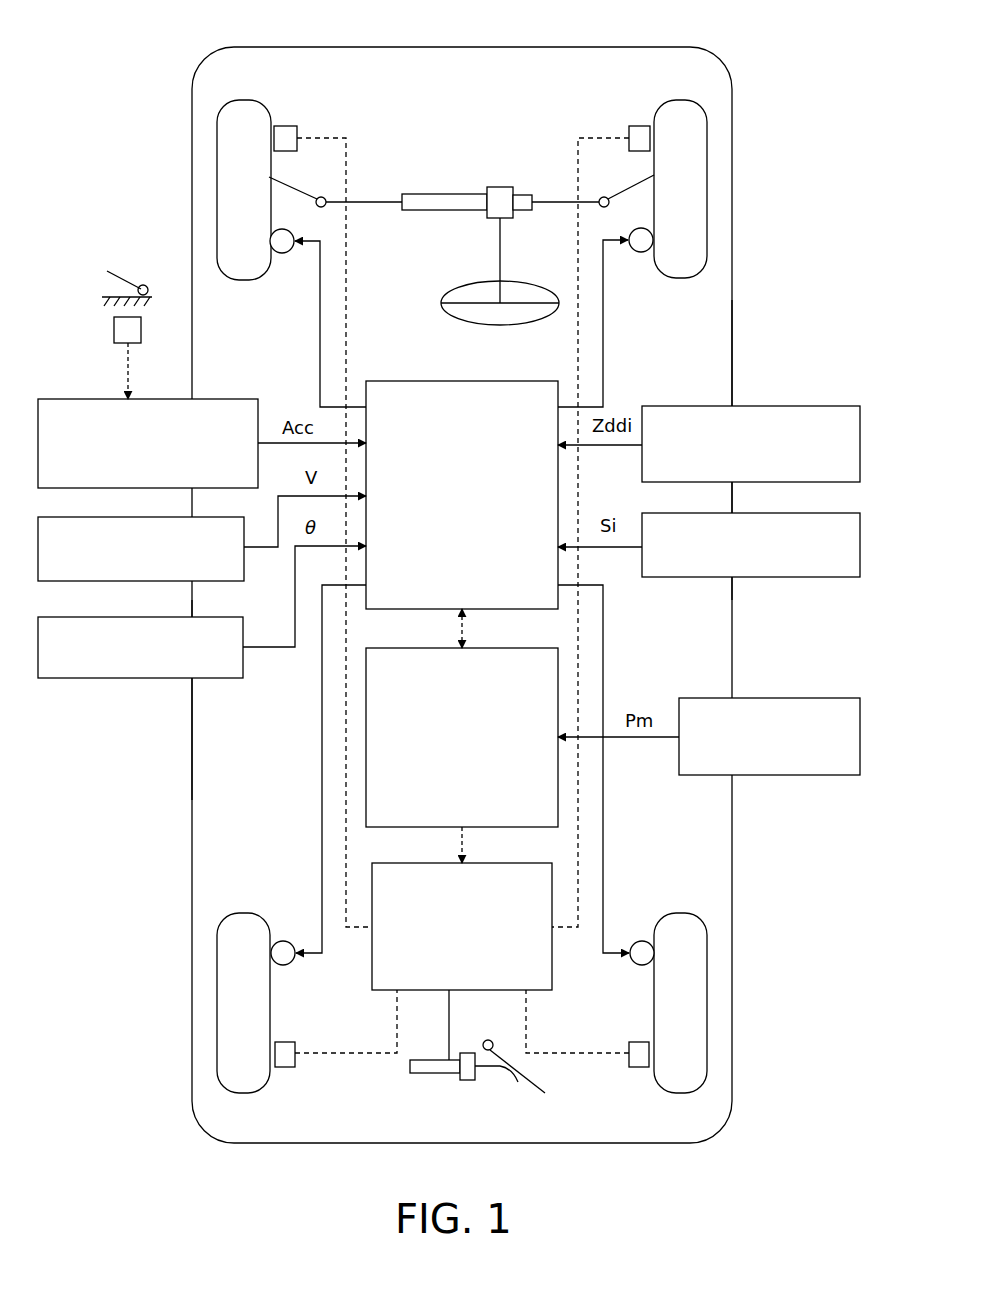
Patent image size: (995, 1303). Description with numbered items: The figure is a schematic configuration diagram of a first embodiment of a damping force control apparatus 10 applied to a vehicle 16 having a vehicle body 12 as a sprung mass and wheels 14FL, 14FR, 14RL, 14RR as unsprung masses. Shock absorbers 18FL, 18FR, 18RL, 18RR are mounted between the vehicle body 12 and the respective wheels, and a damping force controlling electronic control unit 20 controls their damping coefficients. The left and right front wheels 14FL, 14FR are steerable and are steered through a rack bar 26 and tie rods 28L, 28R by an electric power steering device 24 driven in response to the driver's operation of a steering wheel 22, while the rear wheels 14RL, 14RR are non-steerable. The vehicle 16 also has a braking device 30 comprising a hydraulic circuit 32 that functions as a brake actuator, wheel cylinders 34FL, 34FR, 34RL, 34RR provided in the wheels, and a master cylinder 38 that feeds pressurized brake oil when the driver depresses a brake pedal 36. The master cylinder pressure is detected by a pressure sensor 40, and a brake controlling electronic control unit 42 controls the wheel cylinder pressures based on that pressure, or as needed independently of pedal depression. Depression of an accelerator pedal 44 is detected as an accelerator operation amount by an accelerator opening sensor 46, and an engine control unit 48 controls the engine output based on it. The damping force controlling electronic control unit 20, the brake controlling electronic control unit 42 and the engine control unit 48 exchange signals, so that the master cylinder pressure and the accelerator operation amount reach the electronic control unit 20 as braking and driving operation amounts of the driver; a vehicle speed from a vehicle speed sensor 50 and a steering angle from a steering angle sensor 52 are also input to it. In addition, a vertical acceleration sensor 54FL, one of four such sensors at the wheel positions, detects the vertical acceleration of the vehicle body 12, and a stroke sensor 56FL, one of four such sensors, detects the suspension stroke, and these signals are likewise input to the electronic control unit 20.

The damping force control apparatus 10 is at (776, 332).
The vehicle body 12 is at (732, 145).
The front left wheel 14FL is at (217, 166).
The front right wheel 14FR is at (707, 201).
The rear left wheel 14RL is at (217, 1008).
The rear right wheel 14RR is at (707, 1008).
The vehicle 16 is at (190, 97).
The front left shock absorber 18FL is at (282, 253).
The front right shock absorber 18FR is at (640, 252).
The rear left shock absorber 18RL is at (284, 941).
The rear right shock absorber 18RR is at (643, 941).
The damping force controlling electronic control unit 20 is at (450, 582).
The steering wheel 22 is at (505, 325).
The electric power steering device 24 is at (484, 185).
The rack bar 26 is at (386, 210).
The left tie rod 28L is at (285, 181).
The right tie rod 28R is at (640, 181).
The braking device 30 is at (398, 1082).
The hydraulic circuit 32 is at (450, 967).
The front left wheel cylinder 34FL is at (287, 126).
The front right wheel cylinder 34FR is at (635, 126).
The rear left wheel cylinder 34RL is at (285, 1042).
The rear right wheel cylinder 34RR is at (639, 1042).
The brake pedal 36 is at (539, 1085).
The master cylinder 38 is at (424, 1074).
The pressure sensor 40 is at (790, 775).
The brake controlling electronic control unit 42 is at (450, 807).
The accelerator pedal 44 is at (120, 272).
The accelerator opening sensor 46 is at (114, 329).
The engine control unit 48 is at (218, 399).
The vehicle speed sensor 50 is at (244, 566).
The steering angle sensor 52 is at (115, 678).
The vertical acceleration sensor 54FL is at (678, 406).
The stroke sensor 56FL is at (678, 577).